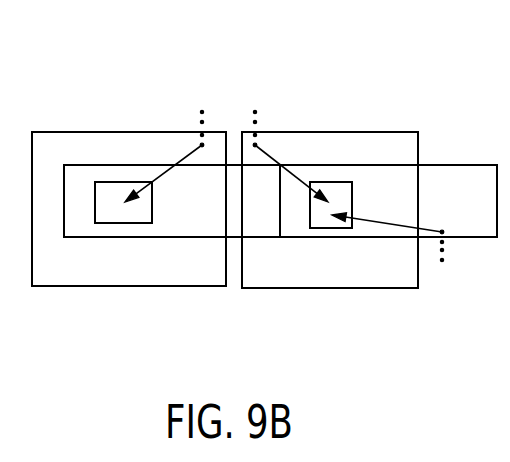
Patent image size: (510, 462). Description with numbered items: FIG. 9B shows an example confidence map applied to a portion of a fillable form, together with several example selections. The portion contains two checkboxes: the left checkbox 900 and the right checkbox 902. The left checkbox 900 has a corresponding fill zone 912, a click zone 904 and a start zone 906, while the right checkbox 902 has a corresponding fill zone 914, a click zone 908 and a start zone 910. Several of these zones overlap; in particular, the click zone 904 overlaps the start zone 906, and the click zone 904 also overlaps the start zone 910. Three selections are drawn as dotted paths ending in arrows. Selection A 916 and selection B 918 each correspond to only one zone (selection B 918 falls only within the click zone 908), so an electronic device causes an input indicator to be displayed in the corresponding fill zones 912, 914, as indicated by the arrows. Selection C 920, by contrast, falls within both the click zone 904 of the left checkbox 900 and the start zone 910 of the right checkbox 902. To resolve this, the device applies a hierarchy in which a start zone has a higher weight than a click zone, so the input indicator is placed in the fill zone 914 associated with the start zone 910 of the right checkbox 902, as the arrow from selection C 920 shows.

The checkbox 900 is at (123, 182).
The checkbox 902 is at (330, 182).
The click zone 904 is at (85, 238).
The start zone 906 is at (75, 131).
The click zone 908 is at (450, 165).
The start zone 910 is at (365, 290).
The fill zone 912 is at (128, 215).
The fill zone 914 is at (328, 217).
The selection A 916 is at (205, 77).
The selection B 918 is at (443, 298).
The selection C 920 is at (258, 77).